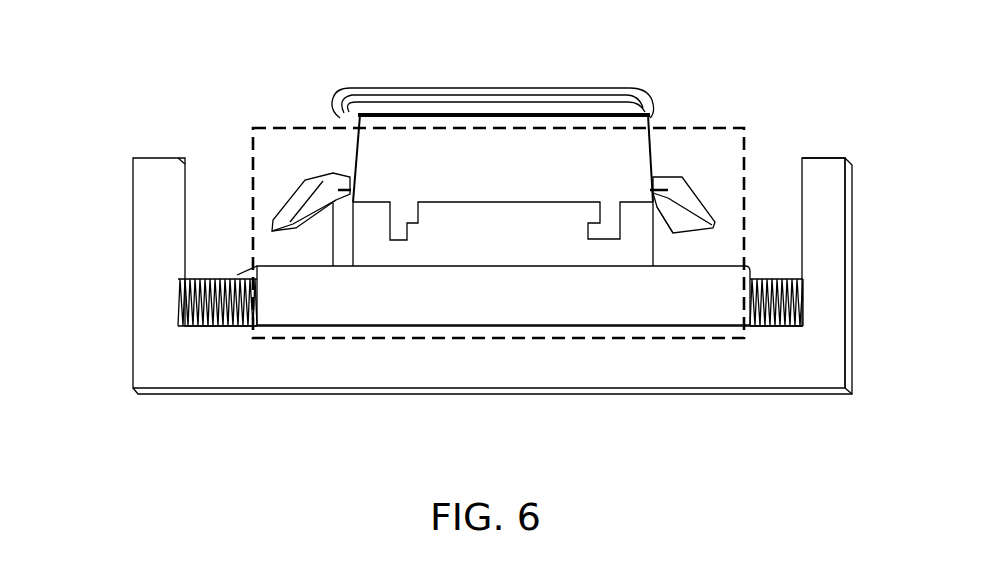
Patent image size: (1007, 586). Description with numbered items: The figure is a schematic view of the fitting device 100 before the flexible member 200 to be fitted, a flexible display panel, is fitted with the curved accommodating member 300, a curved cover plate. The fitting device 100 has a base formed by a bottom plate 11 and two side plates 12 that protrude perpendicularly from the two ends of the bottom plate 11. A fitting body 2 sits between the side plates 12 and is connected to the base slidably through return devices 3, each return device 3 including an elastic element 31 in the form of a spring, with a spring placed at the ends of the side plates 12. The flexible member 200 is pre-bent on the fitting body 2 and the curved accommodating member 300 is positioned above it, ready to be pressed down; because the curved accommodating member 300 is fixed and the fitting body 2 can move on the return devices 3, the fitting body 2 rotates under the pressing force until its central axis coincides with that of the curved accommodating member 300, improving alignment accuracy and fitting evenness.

The fitting device 100 is at (490, 260).
The bottom plate 11 is at (553, 357).
The side plate 12 is at (833, 255).
The fitting body 2 is at (542, 174).
The flexible member to be fitted 200 is at (350, 122).
The curved accommodating member 300 is at (568, 88).
The return device 3 is at (548, 359).
The elastic element 31 is at (778, 320).